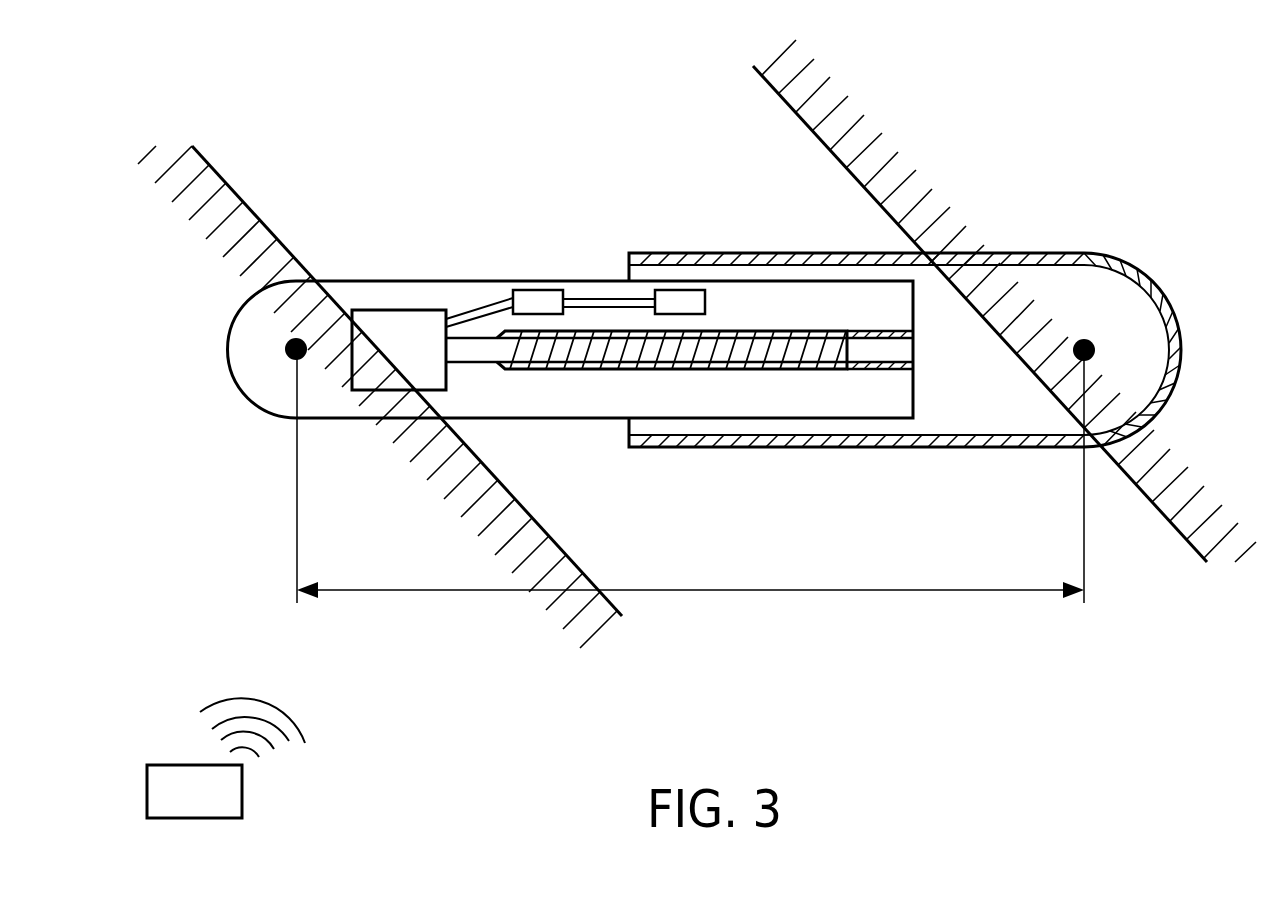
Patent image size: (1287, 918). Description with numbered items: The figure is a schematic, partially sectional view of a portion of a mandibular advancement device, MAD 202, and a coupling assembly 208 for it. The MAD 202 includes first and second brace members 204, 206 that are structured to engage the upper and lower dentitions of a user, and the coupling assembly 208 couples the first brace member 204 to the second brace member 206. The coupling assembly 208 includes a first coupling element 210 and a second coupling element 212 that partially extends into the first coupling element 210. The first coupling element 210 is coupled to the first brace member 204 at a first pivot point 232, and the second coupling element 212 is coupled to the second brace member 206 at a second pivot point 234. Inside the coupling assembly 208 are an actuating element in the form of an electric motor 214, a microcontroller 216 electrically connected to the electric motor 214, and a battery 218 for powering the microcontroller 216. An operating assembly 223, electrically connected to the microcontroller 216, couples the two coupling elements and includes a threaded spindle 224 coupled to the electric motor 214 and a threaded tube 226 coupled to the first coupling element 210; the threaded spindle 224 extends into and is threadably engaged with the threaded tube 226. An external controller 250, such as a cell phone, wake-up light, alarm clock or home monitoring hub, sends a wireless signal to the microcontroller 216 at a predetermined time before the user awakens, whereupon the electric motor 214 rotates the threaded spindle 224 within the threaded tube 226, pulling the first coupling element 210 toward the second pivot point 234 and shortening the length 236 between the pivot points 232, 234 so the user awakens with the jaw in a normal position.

The MAD 202 is at (457, 124).
The first brace member 204 is at (1177, 517).
The second brace member 206 is at (236, 211).
The coupling assembly 208 is at (596, 190).
The first coupling element 210 is at (866, 449).
The second coupling element 212 is at (344, 420).
The electric motor 214 is at (397, 332).
The microcontroller 216 is at (540, 298).
The battery 218 is at (680, 300).
The operating assembly 223 is at (784, 320).
The threaded spindle 224 is at (580, 347).
The threaded tube 226 is at (893, 365).
The first pivot point 232 is at (1097, 348).
The second pivot point 234 is at (286, 349).
The length 236 is at (748, 585).
The external controller 250 is at (230, 793).